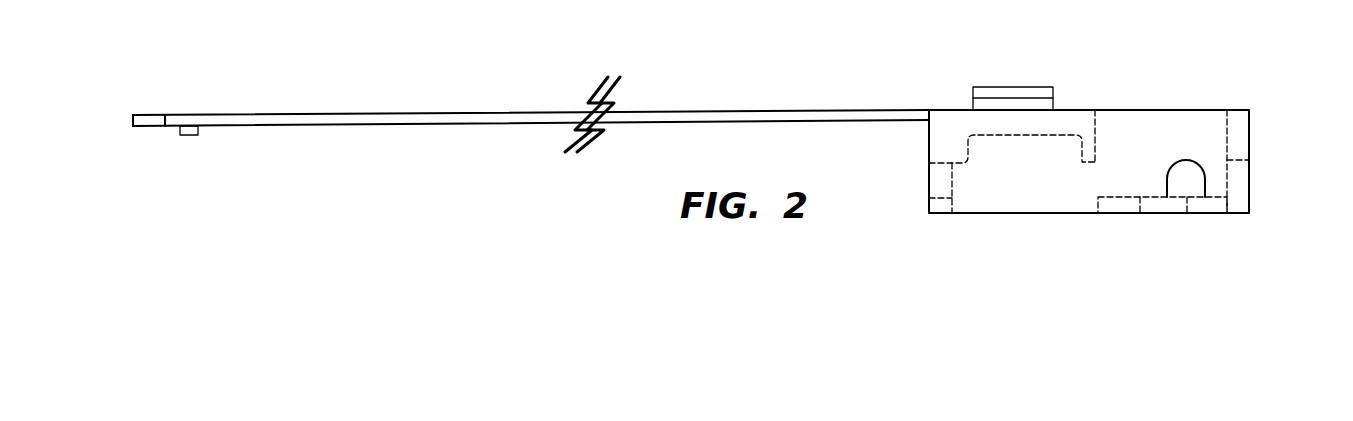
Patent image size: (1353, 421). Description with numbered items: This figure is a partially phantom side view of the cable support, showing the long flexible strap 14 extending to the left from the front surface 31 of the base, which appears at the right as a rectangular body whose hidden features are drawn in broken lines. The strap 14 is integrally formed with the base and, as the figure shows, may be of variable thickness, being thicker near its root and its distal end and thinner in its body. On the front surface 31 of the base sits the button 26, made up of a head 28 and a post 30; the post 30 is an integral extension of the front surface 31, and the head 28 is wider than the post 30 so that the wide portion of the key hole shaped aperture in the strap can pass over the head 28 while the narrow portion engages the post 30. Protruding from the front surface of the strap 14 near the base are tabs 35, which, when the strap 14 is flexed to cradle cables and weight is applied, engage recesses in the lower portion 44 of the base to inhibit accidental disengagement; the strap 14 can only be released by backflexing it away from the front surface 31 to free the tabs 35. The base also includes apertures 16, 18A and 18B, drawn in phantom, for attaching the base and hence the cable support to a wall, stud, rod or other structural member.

The strap 14 is at (432, 117).
The tabs 35 is at (189, 135).
The button 26 is at (955, 77).
The head 28 is at (1008, 92).
The front surface 31 is at (1054, 102).
The post 30 is at (1078, 109).
The lower portion 44 is at (1083, 125).
The aperture 18A is at (1238, 173).
The aperture 18B is at (1187, 185).
The aperture 16 is at (1150, 203).